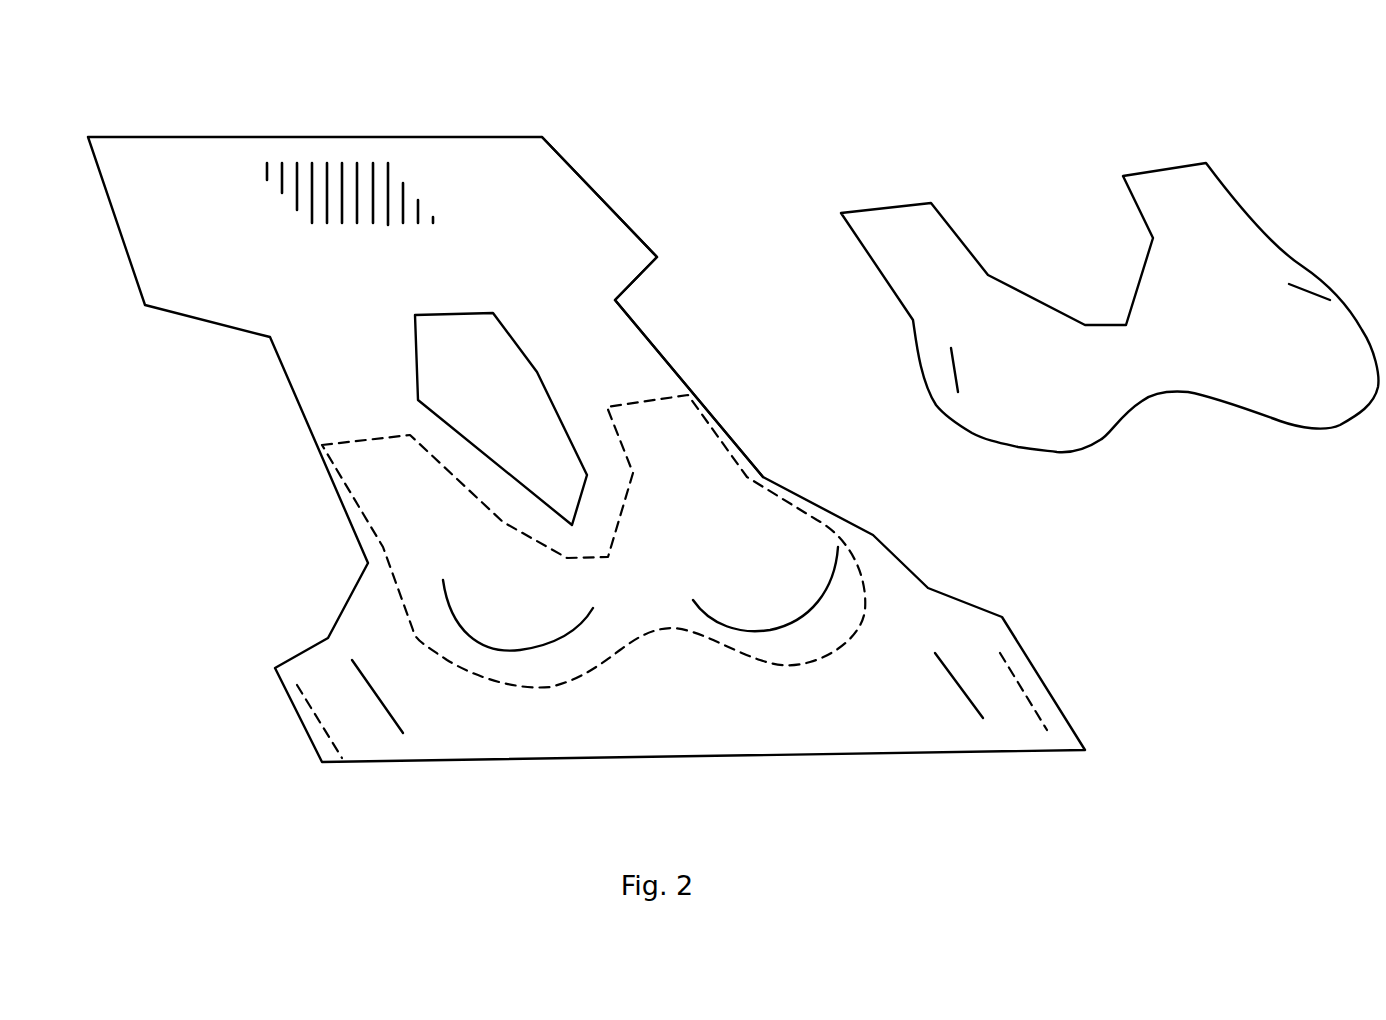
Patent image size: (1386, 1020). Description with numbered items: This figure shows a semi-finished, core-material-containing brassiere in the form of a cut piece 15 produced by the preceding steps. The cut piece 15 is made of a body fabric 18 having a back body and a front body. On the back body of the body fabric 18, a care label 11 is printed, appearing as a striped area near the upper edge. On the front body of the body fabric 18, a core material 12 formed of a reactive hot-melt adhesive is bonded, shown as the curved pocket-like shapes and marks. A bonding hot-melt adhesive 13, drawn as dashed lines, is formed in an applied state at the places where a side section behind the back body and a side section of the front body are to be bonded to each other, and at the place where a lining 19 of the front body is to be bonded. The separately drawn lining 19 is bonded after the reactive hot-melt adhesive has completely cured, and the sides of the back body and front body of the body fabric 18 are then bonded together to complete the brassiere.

The care label 11 is at (335, 163).
The core material 12 is at (810, 610).
The bonding hot-melt adhesive 13 is at (750, 463).
The cut piece 15 is at (142, 192).
The body fabric 18 is at (583, 220).
The lining 19 is at (1208, 199).